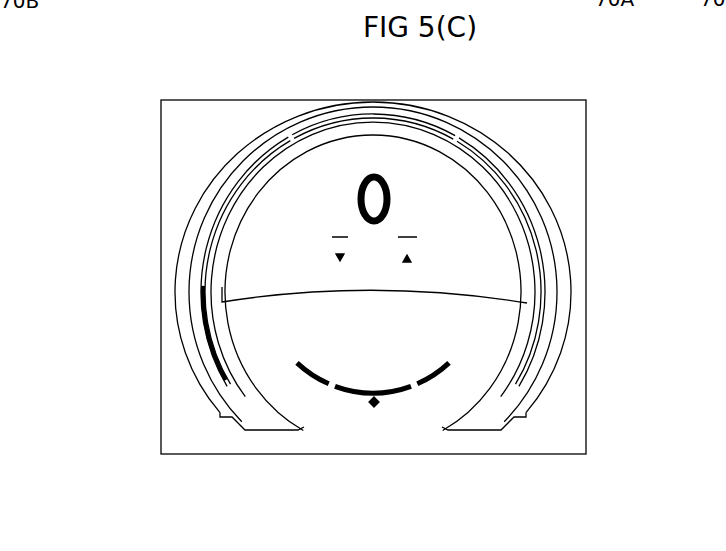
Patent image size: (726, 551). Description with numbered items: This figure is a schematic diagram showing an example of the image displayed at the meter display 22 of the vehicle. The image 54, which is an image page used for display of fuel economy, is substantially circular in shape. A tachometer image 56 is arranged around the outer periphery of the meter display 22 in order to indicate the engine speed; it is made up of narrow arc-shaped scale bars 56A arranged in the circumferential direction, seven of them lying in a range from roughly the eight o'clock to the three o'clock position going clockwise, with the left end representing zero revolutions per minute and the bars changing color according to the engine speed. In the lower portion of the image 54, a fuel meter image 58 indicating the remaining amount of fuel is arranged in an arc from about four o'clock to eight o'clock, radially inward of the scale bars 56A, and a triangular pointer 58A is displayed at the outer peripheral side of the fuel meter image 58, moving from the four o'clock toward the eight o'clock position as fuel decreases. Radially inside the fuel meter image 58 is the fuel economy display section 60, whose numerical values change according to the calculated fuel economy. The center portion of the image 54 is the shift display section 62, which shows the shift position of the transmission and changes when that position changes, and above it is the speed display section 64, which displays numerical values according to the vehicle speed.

The meter display 22 is at (436, 277).
The image 54 is at (590, 214).
The tachometer image 56 is at (345, 110).
The scale bars 56A is at (320, 128).
The fuel meter image 58 is at (441, 387).
The pointer 58A is at (380, 403).
The fuel economy display section 60 is at (420, 330).
The shift display section 62 is at (323, 258).
The speed display section 64 is at (340, 205).